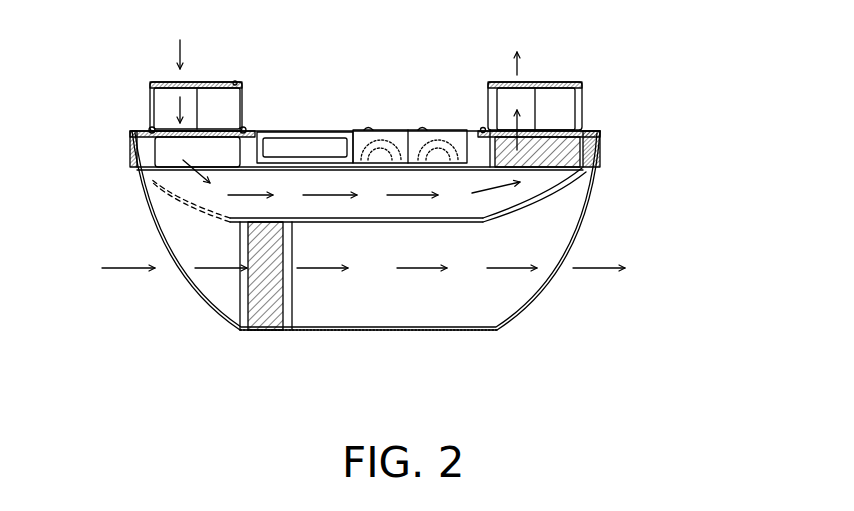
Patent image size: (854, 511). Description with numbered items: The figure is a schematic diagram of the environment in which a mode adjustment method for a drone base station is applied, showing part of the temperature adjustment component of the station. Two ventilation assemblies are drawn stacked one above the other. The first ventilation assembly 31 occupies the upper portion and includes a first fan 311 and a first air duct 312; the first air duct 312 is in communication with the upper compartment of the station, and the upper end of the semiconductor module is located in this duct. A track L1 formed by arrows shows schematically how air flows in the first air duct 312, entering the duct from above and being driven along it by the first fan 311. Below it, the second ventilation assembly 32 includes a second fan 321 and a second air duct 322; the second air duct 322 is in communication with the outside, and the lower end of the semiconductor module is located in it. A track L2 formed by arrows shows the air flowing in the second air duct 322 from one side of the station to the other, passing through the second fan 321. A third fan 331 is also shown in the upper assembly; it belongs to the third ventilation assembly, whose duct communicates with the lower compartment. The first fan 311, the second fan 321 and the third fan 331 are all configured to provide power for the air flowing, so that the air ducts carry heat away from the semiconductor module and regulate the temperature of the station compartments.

The first ventilation assembly 31 is at (682, 127).
The first fan 311 is at (558, 155).
The first air duct 312 is at (530, 188).
The third fan 331 is at (437, 150).
The second ventilation assembly 32 is at (338, 382).
The second fan 321 is at (267, 308).
The second air duct 322 is at (365, 317).
The track L1 is at (197, 71).
The track L2 is at (105, 270).